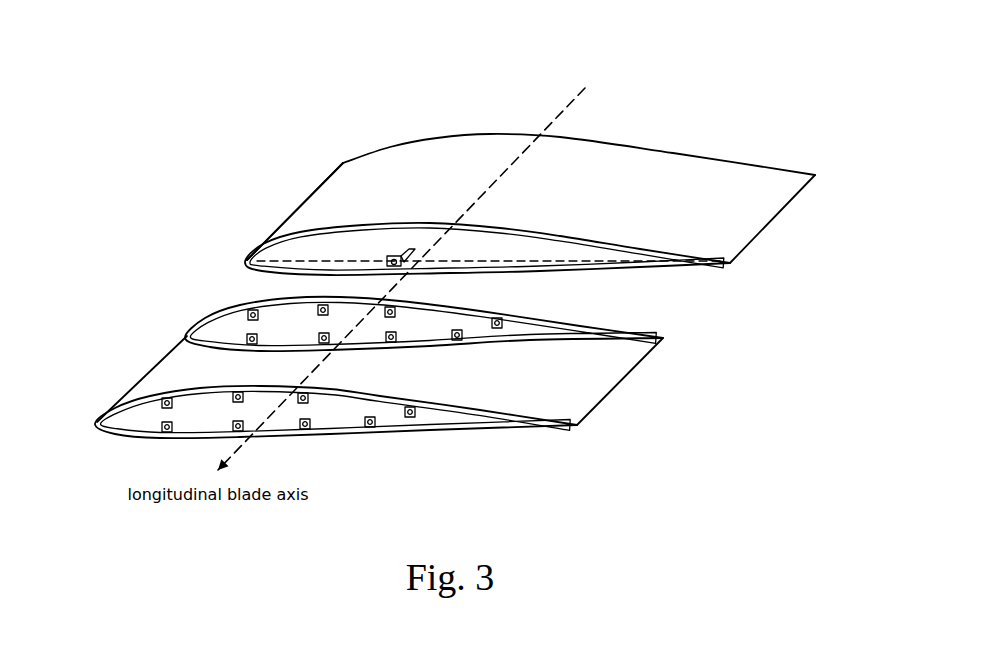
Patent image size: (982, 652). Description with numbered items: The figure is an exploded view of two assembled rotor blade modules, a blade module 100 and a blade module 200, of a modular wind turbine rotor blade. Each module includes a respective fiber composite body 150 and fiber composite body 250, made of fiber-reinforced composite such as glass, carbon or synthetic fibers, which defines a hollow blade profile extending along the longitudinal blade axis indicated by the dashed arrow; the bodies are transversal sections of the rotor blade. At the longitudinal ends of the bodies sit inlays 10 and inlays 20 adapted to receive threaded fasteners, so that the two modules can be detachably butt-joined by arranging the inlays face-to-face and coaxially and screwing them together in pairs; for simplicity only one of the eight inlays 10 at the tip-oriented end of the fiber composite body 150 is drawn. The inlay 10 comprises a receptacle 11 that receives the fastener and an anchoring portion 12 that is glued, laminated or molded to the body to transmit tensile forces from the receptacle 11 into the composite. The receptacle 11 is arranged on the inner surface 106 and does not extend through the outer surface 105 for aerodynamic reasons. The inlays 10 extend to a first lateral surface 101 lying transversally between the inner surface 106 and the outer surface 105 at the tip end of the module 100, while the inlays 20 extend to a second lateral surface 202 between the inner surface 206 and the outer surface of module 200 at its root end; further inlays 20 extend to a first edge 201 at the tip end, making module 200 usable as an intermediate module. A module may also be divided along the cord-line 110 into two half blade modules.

The inlay 10 is at (401, 166).
The receptacle portion 11 is at (390, 257).
The anchoring portion 12 is at (411, 253).
The inlays 20 is at (317, 332).
The blade module 100 is at (766, 230).
The first lateral surface 101 is at (499, 232).
The outer surface 105 is at (713, 182).
The inner surface 106 is at (540, 250).
The cord-line 110 is at (300, 258).
The fiber composite body 150 is at (333, 207).
The blade module 200 is at (613, 393).
The first edge 201 is at (96, 423).
The second lateral surface 202 is at (183, 333).
The inner surface 206 is at (143, 420).
The fiber composite body 250 is at (168, 373).